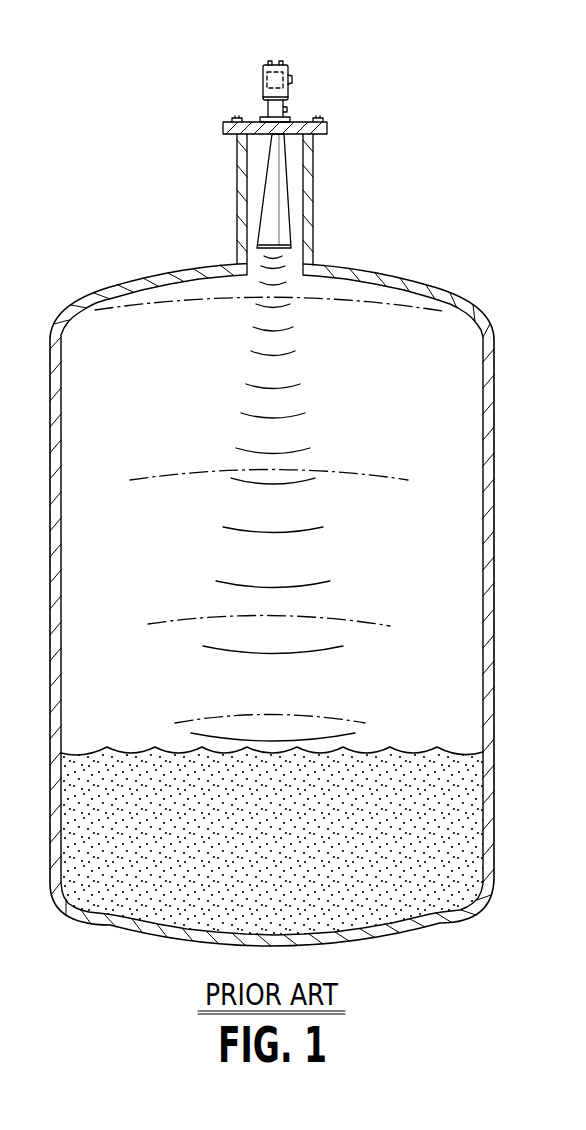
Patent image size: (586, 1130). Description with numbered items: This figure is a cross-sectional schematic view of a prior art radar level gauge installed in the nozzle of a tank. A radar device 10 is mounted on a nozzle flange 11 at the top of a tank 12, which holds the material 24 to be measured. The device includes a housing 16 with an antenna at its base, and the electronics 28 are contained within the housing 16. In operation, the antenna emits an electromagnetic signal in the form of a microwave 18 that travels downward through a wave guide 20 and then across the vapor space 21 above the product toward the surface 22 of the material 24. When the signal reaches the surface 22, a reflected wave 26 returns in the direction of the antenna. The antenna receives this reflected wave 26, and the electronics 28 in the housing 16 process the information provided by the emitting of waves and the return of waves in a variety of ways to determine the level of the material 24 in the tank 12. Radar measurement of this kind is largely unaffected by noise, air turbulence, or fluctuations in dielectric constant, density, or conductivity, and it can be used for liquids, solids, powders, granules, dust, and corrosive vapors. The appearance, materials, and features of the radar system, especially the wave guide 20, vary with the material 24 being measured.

The radar device 10 is at (296, 64).
The nozzle flange 11 is at (237, 163).
The tank 12 is at (465, 300).
The housing 16 is at (290, 91).
The microwave 18 is at (238, 657).
The wave guide 20 is at (266, 221).
The vapor space 21 is at (270, 364).
The surface 22 is at (414, 750).
The material 24 is at (272, 844).
The reflected wave 26 is at (198, 619).
The electronics 28 is at (262, 72).